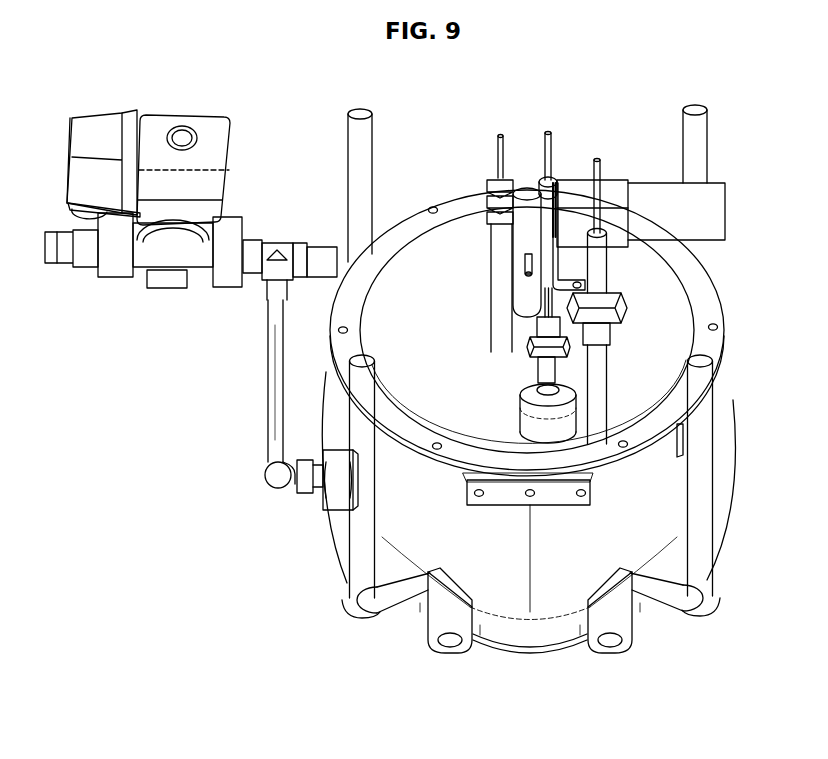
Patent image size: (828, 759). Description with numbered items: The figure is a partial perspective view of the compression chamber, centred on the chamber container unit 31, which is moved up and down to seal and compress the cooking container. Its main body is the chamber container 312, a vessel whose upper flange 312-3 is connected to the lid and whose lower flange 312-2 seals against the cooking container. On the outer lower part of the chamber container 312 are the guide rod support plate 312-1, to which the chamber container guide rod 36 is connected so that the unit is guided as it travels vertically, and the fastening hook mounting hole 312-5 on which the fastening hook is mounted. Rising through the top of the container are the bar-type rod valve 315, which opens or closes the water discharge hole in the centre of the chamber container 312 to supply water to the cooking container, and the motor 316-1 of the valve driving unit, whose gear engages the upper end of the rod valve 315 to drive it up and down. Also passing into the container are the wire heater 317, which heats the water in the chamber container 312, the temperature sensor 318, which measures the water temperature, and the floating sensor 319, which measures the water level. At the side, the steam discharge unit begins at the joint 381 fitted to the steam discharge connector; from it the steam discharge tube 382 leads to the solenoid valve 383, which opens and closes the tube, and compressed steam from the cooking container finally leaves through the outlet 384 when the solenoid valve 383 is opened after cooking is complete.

The chamber container unit 31 is at (718, 407).
The chamber container guide rod 36 is at (704, 523).
The chamber container 312 is at (507, 588).
The guide rod support plate 312-1 is at (350, 612).
The lower flange 312-2 is at (543, 637).
The upper flange 312-3 is at (712, 340).
The fastening hook mounting hole 312-5 is at (437, 650).
The rod valve 315 is at (528, 190).
The motor 316-1 is at (618, 180).
The wire heater 317 is at (552, 140).
The temperature sensor 318 is at (602, 268).
The floating sensor 319 is at (578, 325).
The joint 381 is at (303, 490).
The steam discharge tube 382 is at (268, 405).
The solenoid valve 383 is at (232, 215).
The outlet 384 is at (300, 243).